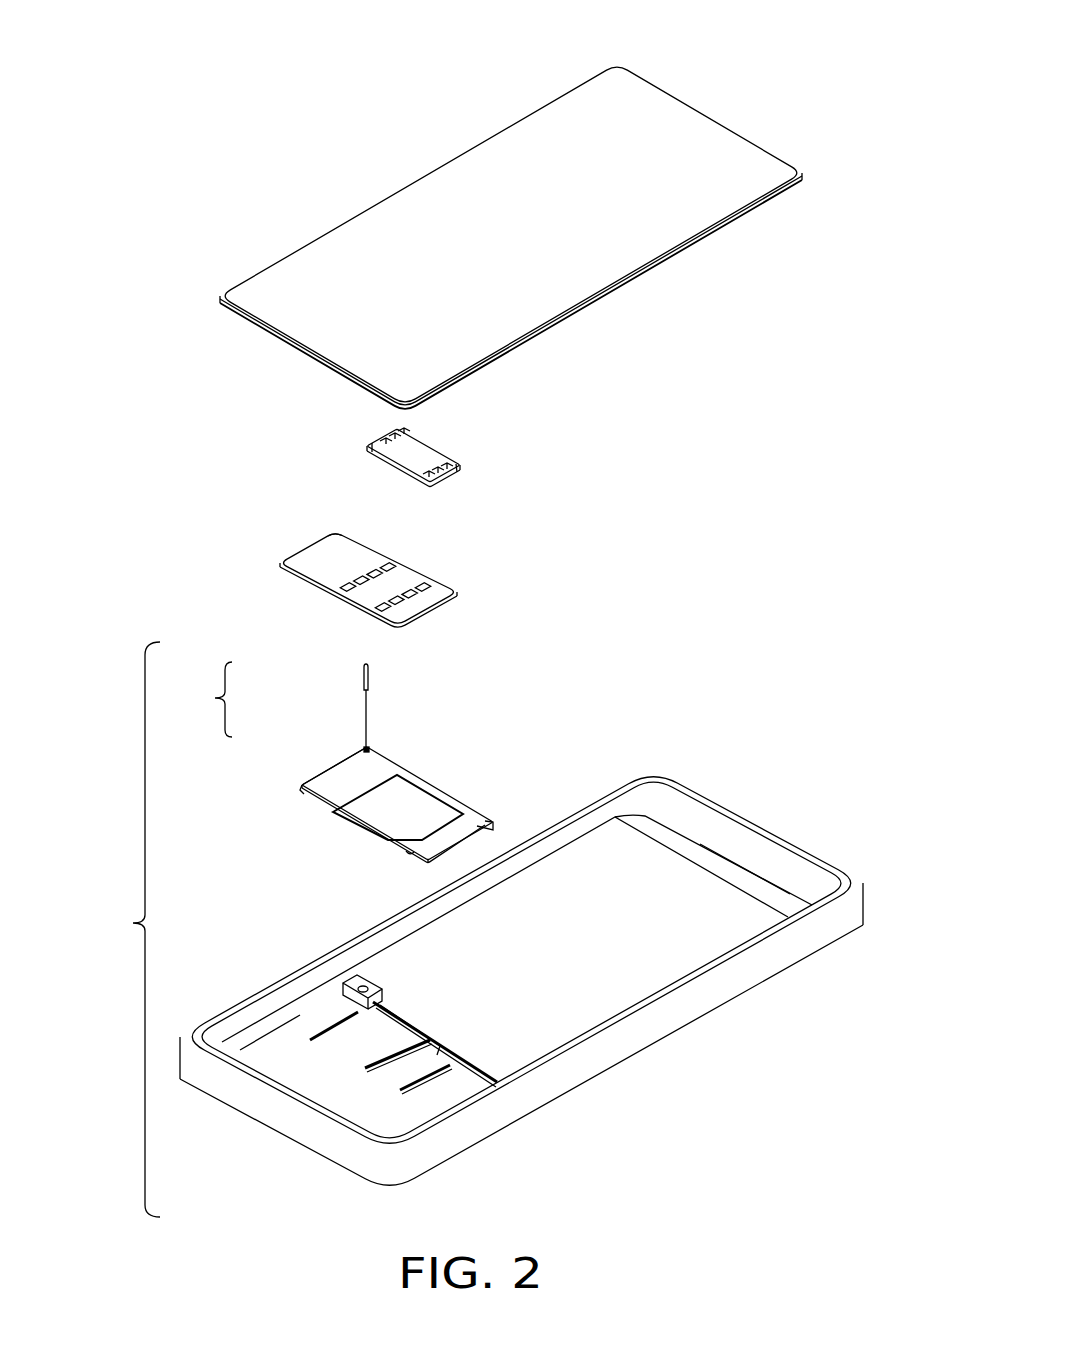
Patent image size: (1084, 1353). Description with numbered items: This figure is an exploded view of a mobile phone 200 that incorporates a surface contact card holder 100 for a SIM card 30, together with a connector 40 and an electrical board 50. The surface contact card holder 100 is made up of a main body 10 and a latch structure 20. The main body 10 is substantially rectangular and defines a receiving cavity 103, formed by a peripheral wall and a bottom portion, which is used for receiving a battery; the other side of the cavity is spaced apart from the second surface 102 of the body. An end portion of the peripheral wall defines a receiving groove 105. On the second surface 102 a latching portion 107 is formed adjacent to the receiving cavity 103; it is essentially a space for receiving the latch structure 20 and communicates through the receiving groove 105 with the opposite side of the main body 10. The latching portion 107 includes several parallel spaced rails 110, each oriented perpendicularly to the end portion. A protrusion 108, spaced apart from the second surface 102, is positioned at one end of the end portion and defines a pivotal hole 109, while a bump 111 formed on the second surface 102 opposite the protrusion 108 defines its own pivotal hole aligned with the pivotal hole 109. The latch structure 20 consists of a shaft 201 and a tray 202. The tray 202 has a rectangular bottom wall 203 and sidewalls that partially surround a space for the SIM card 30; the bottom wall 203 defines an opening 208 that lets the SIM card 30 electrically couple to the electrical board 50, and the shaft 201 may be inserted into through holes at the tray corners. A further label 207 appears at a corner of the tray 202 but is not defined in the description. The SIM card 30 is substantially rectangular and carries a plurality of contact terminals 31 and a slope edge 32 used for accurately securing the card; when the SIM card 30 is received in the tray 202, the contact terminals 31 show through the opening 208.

The mobile phone 200 is at (482, 32).
The electrical board 50 is at (708, 142).
The connector 40 is at (422, 452).
The SIM card 30 is at (366, 568).
The contact terminals 31 is at (420, 585).
The slope edge 32 is at (350, 528).
The surface contact card holder 100 is at (125, 929).
The latch structure 20 is at (342, 758).
The shaft 201 is at (362, 668).
The tray 202 is at (373, 790).
The bottom wall 203 is at (312, 795).
The pivot hole 207 is at (372, 748).
The opening 208 is at (417, 807).
The main body 10 is at (515, 981).
The second surface 102 is at (263, 1045).
The receiving cavity 103 is at (552, 873).
The receiving groove 105 is at (470, 1065).
The latching portion 107 is at (373, 1035).
The protrusion 108 is at (303, 956).
The pivotal hole 109 is at (360, 985).
The rails 110 is at (378, 1045).
The bump 111 is at (540, 1058).